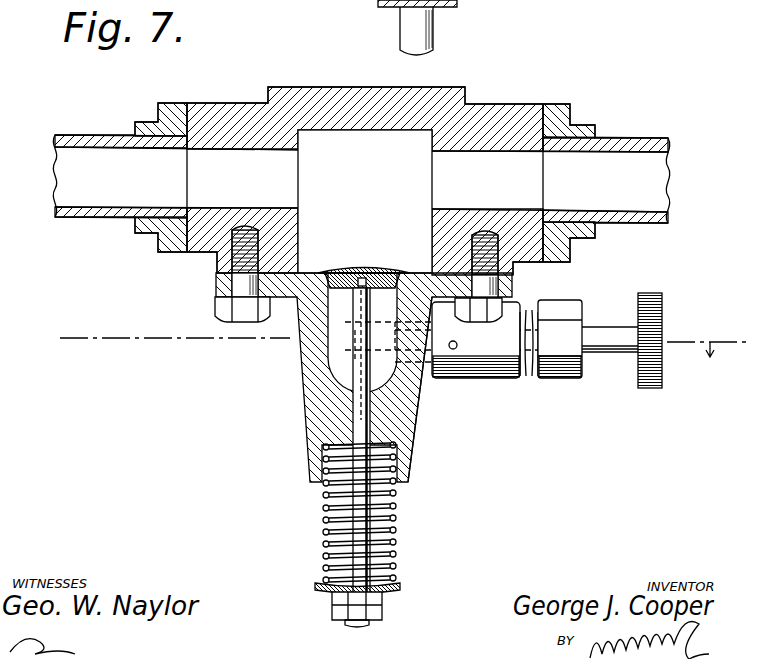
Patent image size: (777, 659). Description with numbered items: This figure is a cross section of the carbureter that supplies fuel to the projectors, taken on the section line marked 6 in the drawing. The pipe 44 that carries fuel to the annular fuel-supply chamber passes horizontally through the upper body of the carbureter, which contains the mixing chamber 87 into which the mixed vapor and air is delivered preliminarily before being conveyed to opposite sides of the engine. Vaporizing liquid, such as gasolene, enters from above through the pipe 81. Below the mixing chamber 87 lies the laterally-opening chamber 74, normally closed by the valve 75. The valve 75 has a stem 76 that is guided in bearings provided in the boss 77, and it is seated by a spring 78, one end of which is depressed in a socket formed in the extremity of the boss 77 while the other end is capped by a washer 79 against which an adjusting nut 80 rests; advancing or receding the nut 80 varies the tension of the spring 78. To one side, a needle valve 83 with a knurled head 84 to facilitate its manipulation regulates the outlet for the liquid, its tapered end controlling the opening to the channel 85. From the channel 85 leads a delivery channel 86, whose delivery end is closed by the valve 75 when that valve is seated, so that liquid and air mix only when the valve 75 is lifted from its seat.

The pipe 44 is at (58, 178).
The pipe 81 is at (413, 26).
The mixing chamber 87 is at (365, 201).
The valve 75 is at (356, 271).
The delivery channel 86 is at (362, 313).
The channel 85 is at (402, 355).
The laterally-opening chamber 74 is at (337, 368).
The stem 76 is at (357, 410).
The boss 77 is at (407, 416).
The needle valve 83 is at (456, 350).
The knurled head 84 is at (662, 321).
The spring 78 is at (397, 514).
The washer 79 is at (400, 586).
The adjusting nut 80 is at (380, 601).
The section line 6- 6 is at (396, 337).